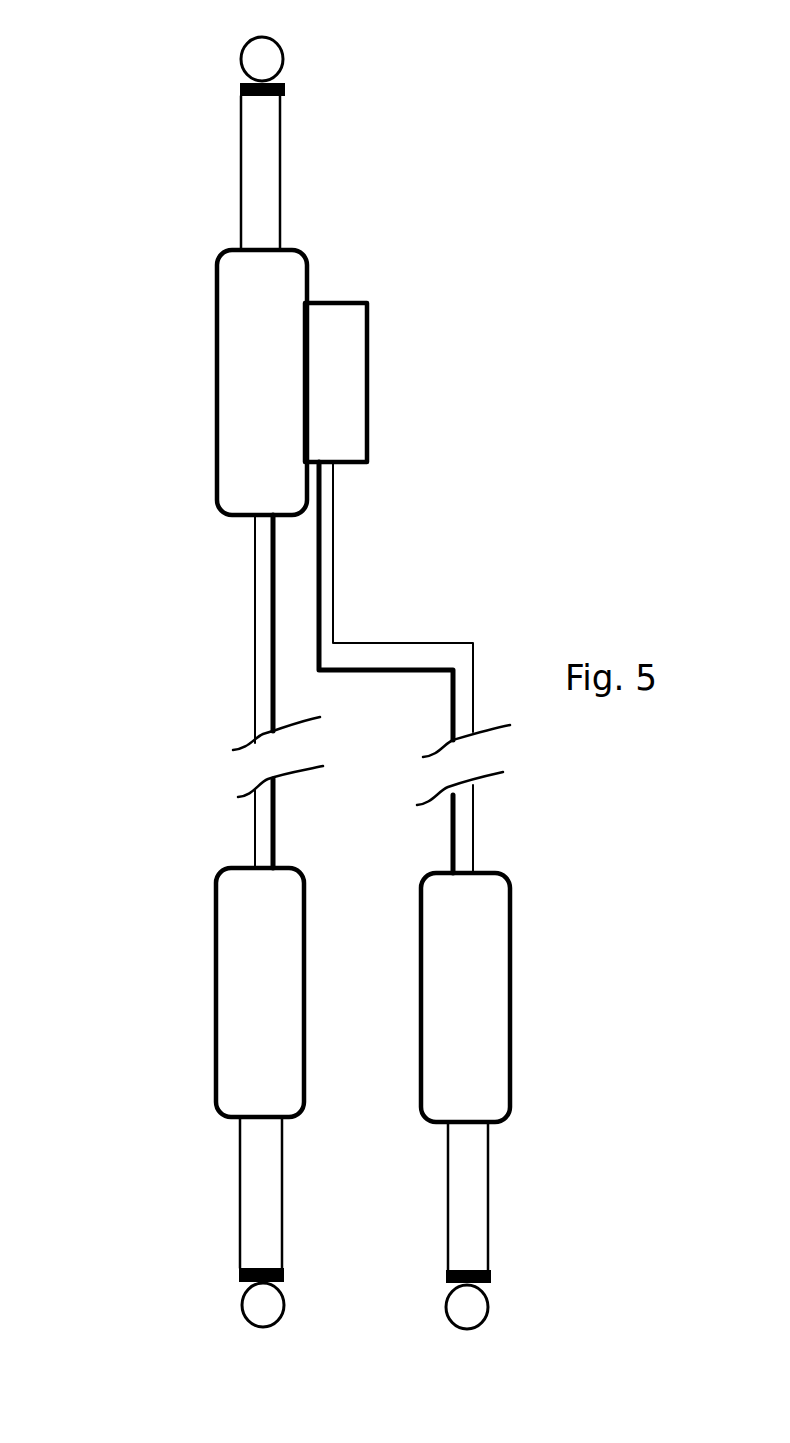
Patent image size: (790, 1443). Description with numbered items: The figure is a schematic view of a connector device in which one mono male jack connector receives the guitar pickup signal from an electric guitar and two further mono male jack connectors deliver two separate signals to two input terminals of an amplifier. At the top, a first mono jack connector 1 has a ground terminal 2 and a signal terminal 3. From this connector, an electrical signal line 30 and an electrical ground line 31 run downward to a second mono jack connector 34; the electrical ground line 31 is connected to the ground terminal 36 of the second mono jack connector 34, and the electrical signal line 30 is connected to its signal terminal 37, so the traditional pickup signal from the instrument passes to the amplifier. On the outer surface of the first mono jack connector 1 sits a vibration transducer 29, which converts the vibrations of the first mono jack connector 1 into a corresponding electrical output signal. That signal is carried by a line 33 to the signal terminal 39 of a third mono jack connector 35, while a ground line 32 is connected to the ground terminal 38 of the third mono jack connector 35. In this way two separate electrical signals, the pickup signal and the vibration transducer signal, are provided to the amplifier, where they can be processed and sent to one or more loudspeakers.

The first mono jack connector 1 is at (242, 368).
The ground terminal 2 is at (257, 217).
The signal terminal 3 is at (257, 70).
The vibration transducer 29 is at (345, 363).
The electrical signal line 30 is at (254, 646).
The electrical ground line 31 is at (270, 697).
The ground line 32 is at (331, 536).
The line 33 is at (335, 582).
The second mono jack connector 34 is at (250, 967).
The third mono jack connector 35 is at (465, 975).
The ground terminal 36 is at (260, 1217).
The signal terminal 37 is at (280, 1307).
The ground terminal 38 is at (458, 1200).
The signal terminal 39 is at (467, 1308).